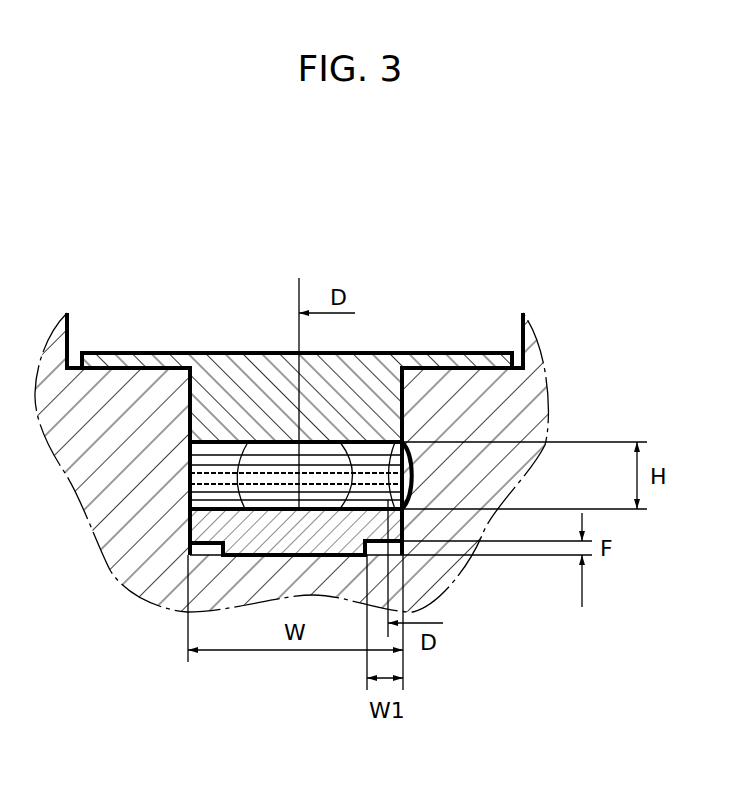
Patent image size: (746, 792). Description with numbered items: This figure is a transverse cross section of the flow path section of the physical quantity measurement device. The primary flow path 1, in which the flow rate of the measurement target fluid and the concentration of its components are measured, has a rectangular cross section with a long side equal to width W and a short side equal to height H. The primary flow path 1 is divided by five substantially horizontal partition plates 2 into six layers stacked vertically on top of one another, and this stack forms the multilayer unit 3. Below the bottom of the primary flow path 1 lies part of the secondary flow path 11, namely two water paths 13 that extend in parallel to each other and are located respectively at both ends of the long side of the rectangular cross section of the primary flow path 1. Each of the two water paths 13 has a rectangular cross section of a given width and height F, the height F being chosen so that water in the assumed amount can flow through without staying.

The primary flow path 1 is at (297, 448).
The partition plate 2 is at (331, 453).
The multilayer unit 3 is at (274, 455).
The secondary flow path 11 is at (193, 551).
The water path 13 is at (363, 551).